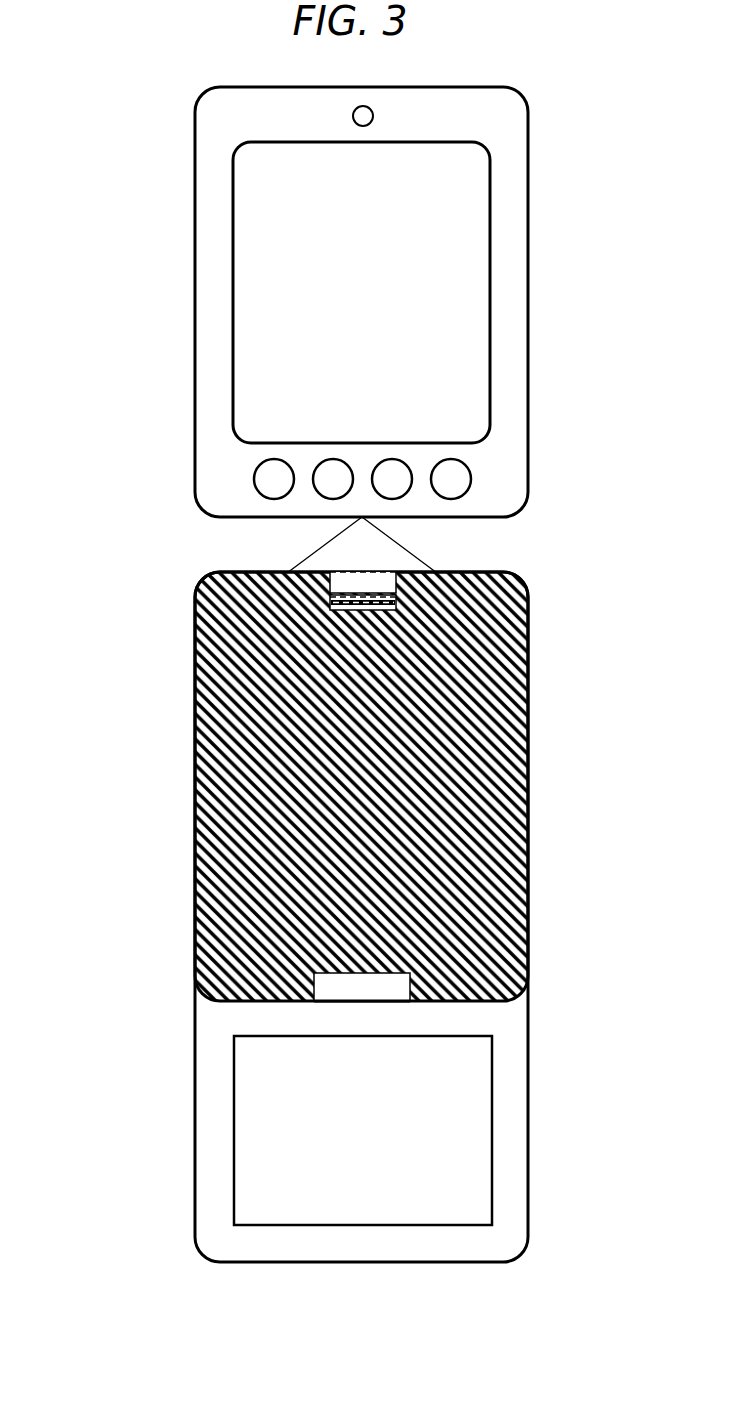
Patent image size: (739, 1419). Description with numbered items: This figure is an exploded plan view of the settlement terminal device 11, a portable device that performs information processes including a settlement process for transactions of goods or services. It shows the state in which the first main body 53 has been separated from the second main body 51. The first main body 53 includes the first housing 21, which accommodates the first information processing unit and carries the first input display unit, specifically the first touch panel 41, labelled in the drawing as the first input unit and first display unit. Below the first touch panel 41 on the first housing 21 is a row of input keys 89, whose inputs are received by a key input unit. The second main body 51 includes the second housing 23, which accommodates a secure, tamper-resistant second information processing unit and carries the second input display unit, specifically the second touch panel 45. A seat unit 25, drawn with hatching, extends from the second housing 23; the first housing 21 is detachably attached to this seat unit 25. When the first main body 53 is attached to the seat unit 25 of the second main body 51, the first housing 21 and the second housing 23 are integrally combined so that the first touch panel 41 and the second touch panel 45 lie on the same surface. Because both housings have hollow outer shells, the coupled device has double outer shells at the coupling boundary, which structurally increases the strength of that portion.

The settlement terminal device 11 is at (130, 203).
The first housing 21 is at (195, 420).
The second housing 23 is at (195, 1055).
The seat unit 25 is at (528, 743).
The first touch panel 41 is at (233, 329).
The second touch panel 45 is at (492, 1167).
The second main body 51 is at (187, 822).
The first main body 53 is at (195, 373).
The input key 89 is at (254, 479).